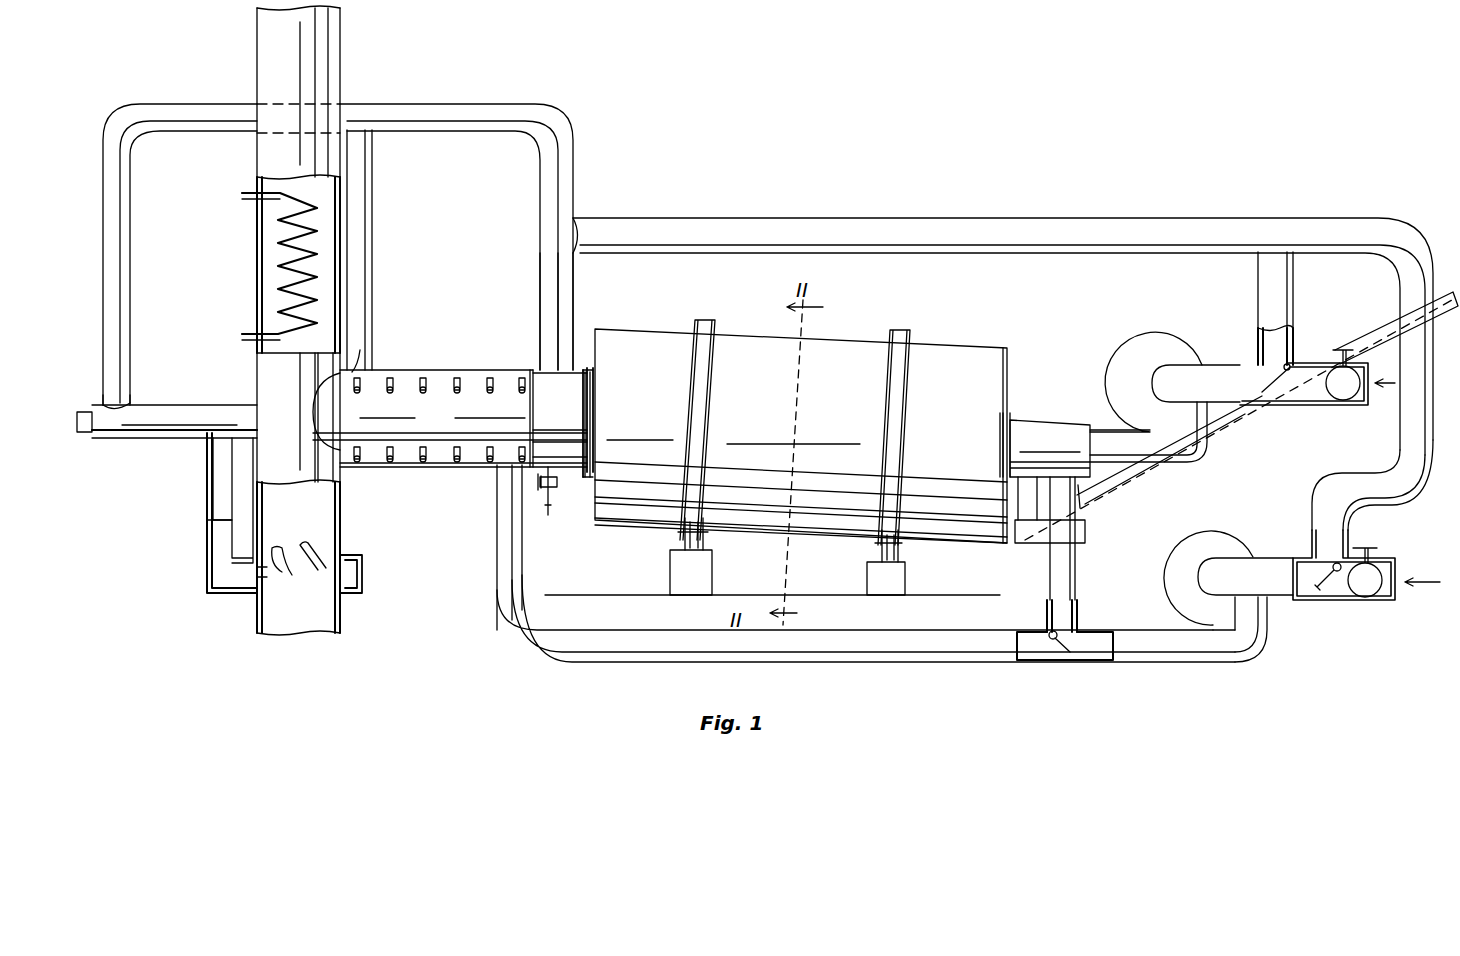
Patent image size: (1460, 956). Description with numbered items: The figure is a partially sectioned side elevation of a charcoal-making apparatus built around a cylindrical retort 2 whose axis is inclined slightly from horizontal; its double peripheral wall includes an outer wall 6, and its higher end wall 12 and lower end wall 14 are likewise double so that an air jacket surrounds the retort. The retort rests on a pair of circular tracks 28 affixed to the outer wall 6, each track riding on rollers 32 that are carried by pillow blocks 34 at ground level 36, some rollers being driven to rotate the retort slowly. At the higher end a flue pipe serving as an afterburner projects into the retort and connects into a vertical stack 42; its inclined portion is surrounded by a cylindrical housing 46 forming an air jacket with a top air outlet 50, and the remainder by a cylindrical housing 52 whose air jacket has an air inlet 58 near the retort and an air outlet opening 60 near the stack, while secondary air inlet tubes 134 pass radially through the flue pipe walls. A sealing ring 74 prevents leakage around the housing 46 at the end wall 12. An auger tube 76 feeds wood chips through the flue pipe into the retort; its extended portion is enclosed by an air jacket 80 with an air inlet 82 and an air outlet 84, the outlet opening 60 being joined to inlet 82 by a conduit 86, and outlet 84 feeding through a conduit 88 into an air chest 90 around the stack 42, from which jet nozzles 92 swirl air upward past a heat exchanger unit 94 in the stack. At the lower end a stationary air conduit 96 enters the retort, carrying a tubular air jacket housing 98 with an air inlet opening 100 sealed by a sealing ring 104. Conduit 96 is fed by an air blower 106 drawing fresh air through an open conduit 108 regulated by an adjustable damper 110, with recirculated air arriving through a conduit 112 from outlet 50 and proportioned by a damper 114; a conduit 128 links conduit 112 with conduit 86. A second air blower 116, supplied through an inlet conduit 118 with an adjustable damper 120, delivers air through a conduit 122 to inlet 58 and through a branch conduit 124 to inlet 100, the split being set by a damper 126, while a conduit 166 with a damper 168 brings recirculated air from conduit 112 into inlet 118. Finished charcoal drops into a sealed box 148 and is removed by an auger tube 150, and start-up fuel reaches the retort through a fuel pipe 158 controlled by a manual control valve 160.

The retort 2 is at (832, 340).
The outer wall 6 is at (862, 343).
The end wall 12 is at (593, 335).
The lower end wall 14 is at (1010, 358).
The circular tracks 28 is at (705, 322).
The rollers 32 is at (672, 530).
The pillow blocks 34 is at (688, 568).
The ground level 36 is at (582, 595).
The vertical stack 42 is at (330, 55).
The cylindrical housing 46 is at (543, 390).
The top air outlet 50 is at (545, 372).
The cylindrical housing 52 is at (443, 376).
The air inlet 58 is at (505, 467).
The air outlet opening 60 is at (362, 372).
The sealing ring 74 is at (585, 482).
The auger tube 76 is at (85, 432).
The air jacket 80 is at (185, 405).
The air inlet 82 is at (115, 405).
The air outlet 84 is at (212, 440).
The conduit 86 is at (210, 104).
The conduit 88 is at (207, 502).
The air chest 90 is at (232, 593).
The jet nozzles 92 is at (292, 578).
The heat exchanger unit 94 is at (265, 262).
The cylindrical air conduit 96 is at (1112, 438).
The tubular air jacket housing 98 is at (1046, 425).
The air inlet opening 100 is at (1090, 504).
The sealing ring 104 is at (1008, 420).
The air blower 106 is at (1160, 348).
The open conduit 108 is at (1318, 362).
The adjustable damper 110 is at (1345, 398).
The conduit 112 is at (548, 288).
The damper 114 is at (1267, 400).
The second air blower 116 is at (1222, 542).
The inlet conduit 118 is at (1283, 562).
The adjustable damper 120 is at (1368, 598).
The conduit 122 is at (600, 662).
The branch conduit 124 is at (1078, 575).
The damper 126 is at (1066, 657).
The conduit 128 is at (455, 105).
The secondary air inlet tubes 134 is at (445, 455).
The sealed box 148 is at (1029, 540).
The auger tube 150 is at (1385, 322).
The fuel pipe 158 is at (548, 515).
The manual control valve 160 is at (538, 480).
The conduit 166 is at (1318, 490).
The damper 168 is at (1322, 590).